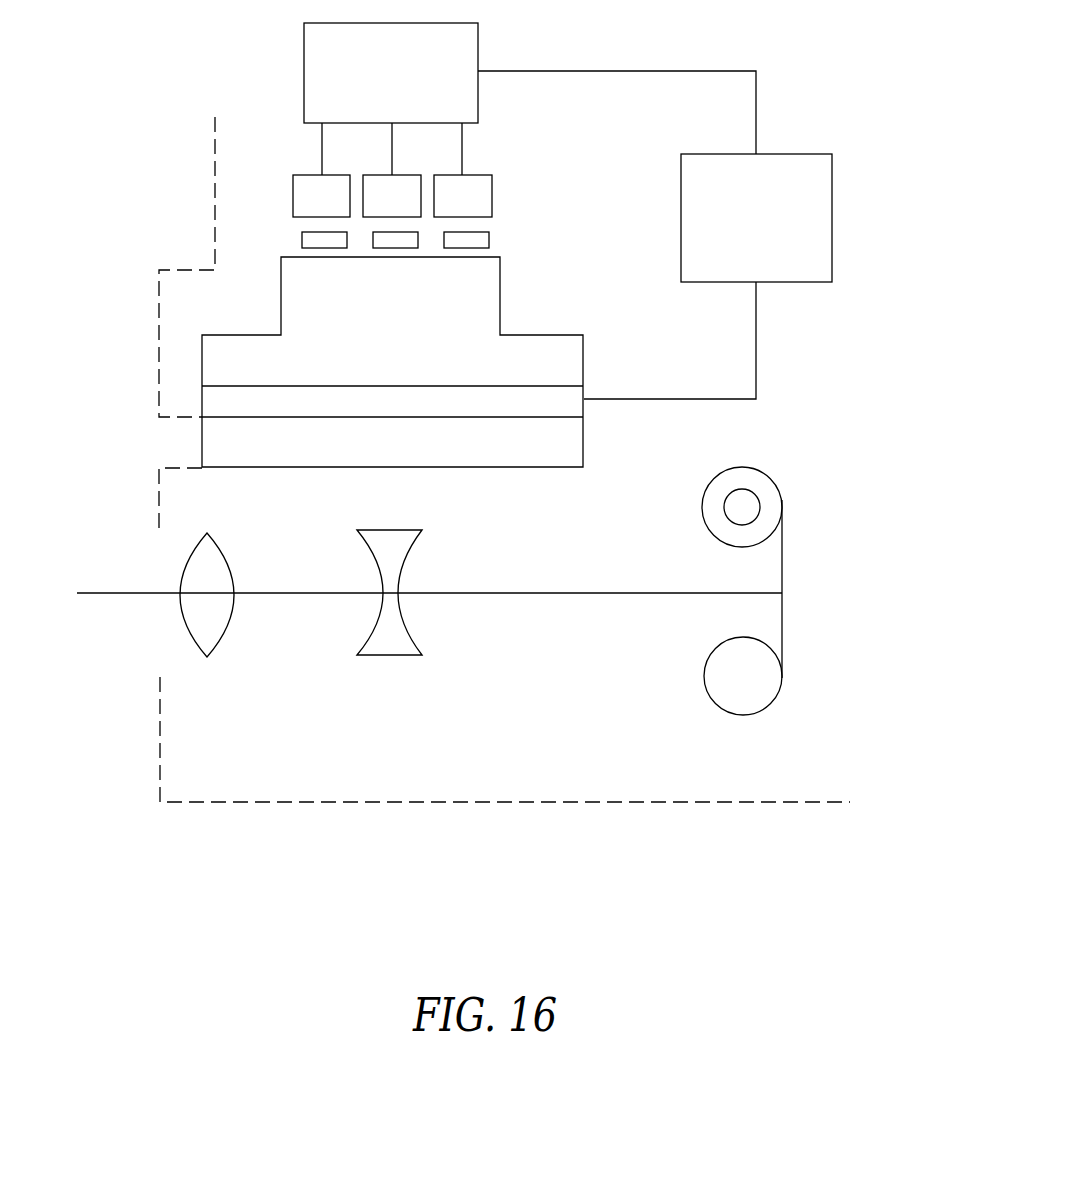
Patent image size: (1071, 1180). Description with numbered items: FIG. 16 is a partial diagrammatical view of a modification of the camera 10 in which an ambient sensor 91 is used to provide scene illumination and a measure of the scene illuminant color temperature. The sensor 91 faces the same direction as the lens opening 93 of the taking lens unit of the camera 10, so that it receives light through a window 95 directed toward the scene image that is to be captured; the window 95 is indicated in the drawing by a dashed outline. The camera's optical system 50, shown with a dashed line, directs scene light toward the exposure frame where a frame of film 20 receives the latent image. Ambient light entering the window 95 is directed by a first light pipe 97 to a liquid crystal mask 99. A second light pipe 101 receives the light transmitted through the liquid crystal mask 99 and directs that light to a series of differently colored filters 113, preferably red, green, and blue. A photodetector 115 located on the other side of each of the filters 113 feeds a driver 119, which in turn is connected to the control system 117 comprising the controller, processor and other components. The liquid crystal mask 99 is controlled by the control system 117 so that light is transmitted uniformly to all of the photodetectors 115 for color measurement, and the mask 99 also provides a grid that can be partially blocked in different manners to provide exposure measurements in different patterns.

The camera 10 is at (737, 795).
The film 20 is at (782, 495).
The optical system 50 is at (530, 700).
The sensor 91 is at (440, 313).
The lens opening 93 is at (166, 643).
The window 95 is at (158, 460).
The first light pipe 97 is at (520, 467).
The liquid crystal mask 99 is at (553, 386).
The second light pipe 101 is at (502, 297).
The filters 113 is at (393, 248).
The photodetector 115 is at (304, 176).
The control system 117 is at (832, 213).
The driver 119 is at (478, 53).